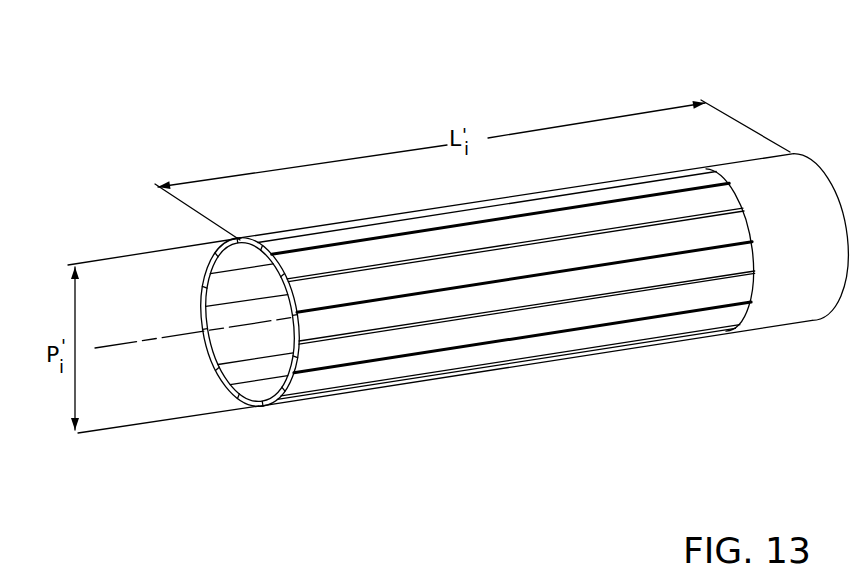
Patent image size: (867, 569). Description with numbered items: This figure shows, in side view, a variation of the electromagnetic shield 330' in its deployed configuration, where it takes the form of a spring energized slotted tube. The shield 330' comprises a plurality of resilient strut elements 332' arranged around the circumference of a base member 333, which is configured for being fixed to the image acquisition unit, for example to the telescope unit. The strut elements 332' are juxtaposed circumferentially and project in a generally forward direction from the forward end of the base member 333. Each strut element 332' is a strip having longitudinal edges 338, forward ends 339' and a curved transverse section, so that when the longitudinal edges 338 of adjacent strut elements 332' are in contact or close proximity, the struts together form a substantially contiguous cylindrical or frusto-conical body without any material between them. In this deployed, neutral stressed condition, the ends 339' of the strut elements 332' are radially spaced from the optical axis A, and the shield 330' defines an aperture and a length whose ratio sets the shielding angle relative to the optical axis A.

The deployable electromagnetic shield 330' is at (485, 220).
The resilient strut elements 332' is at (506, 265).
The longitudinal edges 338 is at (582, 233).
The base member 333 is at (767, 180).
The ends 339' is at (216, 310).
The optical axis A is at (145, 342).